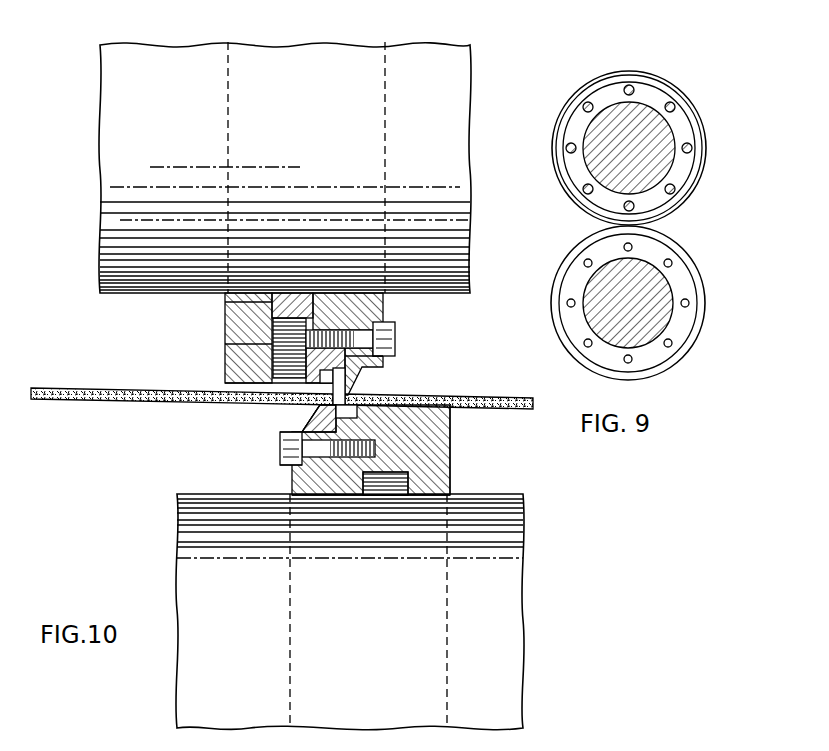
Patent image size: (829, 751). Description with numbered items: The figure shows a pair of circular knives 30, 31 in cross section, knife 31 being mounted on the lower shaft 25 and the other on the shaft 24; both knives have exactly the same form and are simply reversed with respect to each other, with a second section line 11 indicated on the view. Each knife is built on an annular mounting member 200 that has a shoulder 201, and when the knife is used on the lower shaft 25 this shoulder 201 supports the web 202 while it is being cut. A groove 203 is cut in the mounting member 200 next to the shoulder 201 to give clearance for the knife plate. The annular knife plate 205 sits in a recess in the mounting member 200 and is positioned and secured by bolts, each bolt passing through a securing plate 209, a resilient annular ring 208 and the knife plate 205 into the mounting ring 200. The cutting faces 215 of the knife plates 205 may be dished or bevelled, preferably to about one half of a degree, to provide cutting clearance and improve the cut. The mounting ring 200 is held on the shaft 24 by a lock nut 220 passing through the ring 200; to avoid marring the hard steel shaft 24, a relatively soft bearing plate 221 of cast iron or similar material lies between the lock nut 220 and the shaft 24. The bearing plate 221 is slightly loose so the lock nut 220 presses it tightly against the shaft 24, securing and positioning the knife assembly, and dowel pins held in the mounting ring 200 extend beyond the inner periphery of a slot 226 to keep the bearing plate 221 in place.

In FIG. 10, the section line 11- 11 is at (290, 266).
In FIG. 10, the shaft 24 is at (453, 180).
In FIG. 9, the shaft 24 is at (592, 128).
In FIG. 10, the lower shaft 25 is at (523, 501).
In FIG. 9, the lower shaft 25 is at (660, 320).
In FIG. 10, the circular knife 30 is at (318, 354).
In FIG. 9, the circular knife 30 is at (623, 138).
In FIG. 10, the circular knife 31 is at (363, 450).
In FIG. 9, the circular knife 31 is at (638, 313).
In FIG. 9, the annular mounting member 200 is at (668, 354).
In FIG. 10, the shoulder 201 is at (225, 383).
In FIG. 10, the web 202 is at (88, 384).
In FIG. 10, the groove 203 is at (347, 393).
In FIG. 10, the annular knife plate 205 is at (449, 418).
In FIG. 9, the resilient annular ring 208 is at (663, 89).
In FIG. 9, the securing plate 209 is at (583, 112).
In FIG. 10, the cutting face 215 is at (360, 392).
In FIG. 10, the lock nut 220 is at (225, 344).
In FIG. 10, the bearing plate 221 is at (225, 302).
In FIG. 10, the slot 226 is at (402, 483).